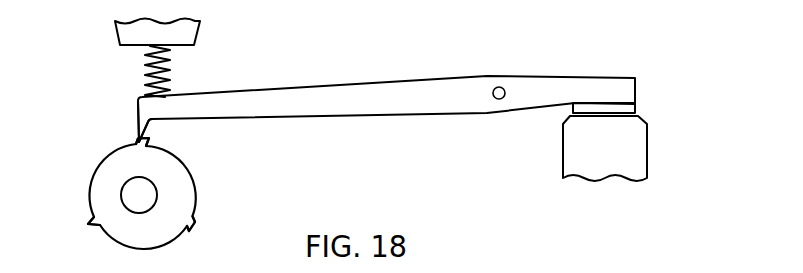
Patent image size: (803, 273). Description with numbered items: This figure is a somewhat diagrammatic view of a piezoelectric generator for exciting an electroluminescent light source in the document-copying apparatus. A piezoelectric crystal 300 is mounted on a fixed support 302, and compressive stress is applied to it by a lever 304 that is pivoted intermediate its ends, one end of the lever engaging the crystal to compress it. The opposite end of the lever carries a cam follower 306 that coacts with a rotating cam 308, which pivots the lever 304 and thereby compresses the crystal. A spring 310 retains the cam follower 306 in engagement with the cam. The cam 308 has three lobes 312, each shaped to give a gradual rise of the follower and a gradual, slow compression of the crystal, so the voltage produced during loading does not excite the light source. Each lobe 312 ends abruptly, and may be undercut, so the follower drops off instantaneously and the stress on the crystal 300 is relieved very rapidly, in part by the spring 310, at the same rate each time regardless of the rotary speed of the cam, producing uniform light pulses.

The piezoelectric crystal 300 is at (622, 110).
The fixed support 302 is at (637, 158).
The lever 304 is at (366, 82).
The cam follower 306 is at (138, 127).
The cam 308 is at (177, 197).
The spring 310 is at (173, 68).
The lobes 312 is at (143, 143).